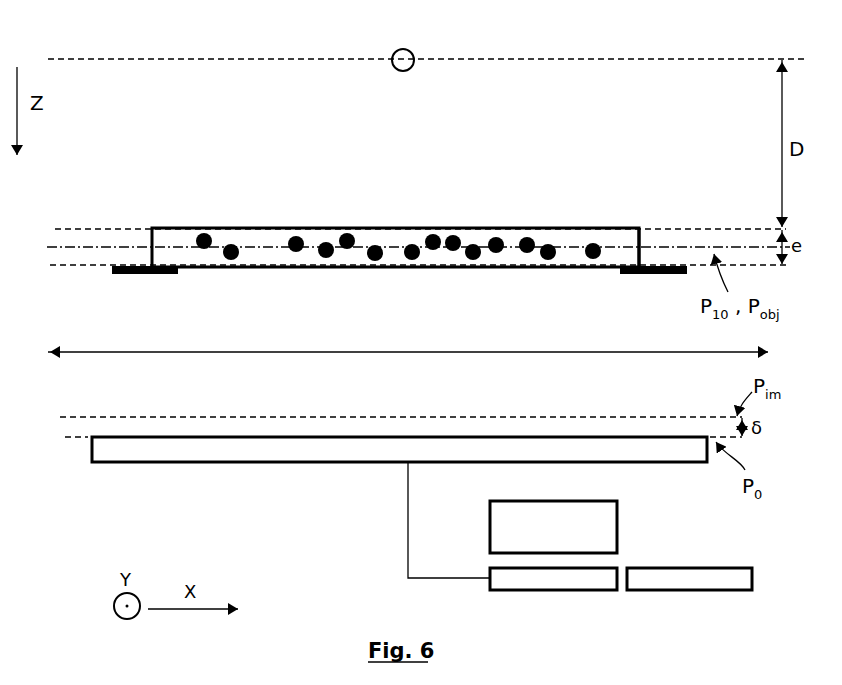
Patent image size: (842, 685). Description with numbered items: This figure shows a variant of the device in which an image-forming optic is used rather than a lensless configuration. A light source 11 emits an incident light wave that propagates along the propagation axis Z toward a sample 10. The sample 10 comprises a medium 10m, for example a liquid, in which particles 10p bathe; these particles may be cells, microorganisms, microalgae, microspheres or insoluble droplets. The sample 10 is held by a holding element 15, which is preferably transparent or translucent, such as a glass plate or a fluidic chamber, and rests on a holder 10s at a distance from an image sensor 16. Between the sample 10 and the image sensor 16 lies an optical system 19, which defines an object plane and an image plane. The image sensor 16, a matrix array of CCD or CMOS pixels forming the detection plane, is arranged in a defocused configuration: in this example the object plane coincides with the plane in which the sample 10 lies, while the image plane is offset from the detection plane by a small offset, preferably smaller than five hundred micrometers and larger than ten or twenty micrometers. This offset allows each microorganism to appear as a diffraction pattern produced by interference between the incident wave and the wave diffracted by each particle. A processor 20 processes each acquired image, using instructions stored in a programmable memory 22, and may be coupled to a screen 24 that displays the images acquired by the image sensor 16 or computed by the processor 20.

The sample 10 is at (408, 258).
The medium 10m is at (275, 233).
The particles 10p is at (439, 238).
The holder 10s is at (144, 278).
The light source 11 is at (390, 57).
The holding element 15 is at (645, 243).
The image sensor 16 is at (682, 463).
The optical system 19 is at (634, 357).
The processor 20 is at (547, 583).
The programmable memory 22 is at (667, 583).
The screen 24 is at (613, 528).